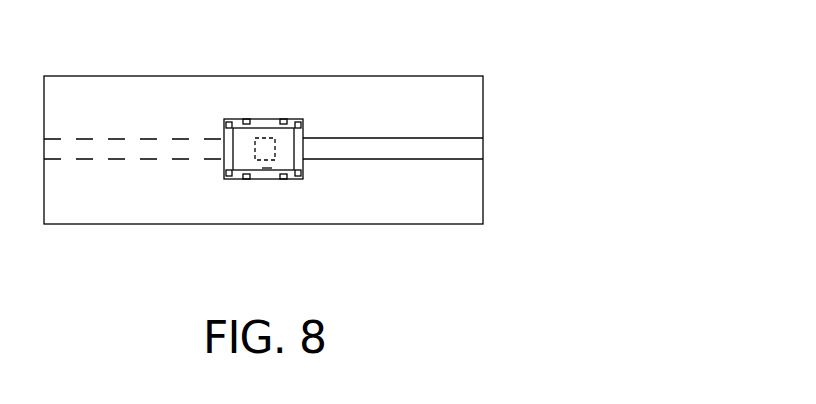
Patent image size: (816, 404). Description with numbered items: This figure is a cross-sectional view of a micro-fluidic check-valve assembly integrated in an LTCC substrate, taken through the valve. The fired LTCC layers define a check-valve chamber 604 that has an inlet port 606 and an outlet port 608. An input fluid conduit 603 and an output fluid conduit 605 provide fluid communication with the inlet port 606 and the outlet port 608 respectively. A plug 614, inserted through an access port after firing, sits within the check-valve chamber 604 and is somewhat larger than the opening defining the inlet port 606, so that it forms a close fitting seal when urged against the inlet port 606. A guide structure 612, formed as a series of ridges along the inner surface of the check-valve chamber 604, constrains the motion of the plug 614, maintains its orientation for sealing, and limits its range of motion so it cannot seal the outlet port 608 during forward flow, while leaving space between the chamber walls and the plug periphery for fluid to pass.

The input fluid conduit 603 is at (163, 152).
The check-valve chamber 604 is at (258, 119).
The output fluid conduit 605 is at (425, 146).
The inlet port 606 is at (270, 148).
The outlet port 608 is at (305, 148).
The guide structure 612 is at (245, 119).
The plug 614 is at (258, 170).